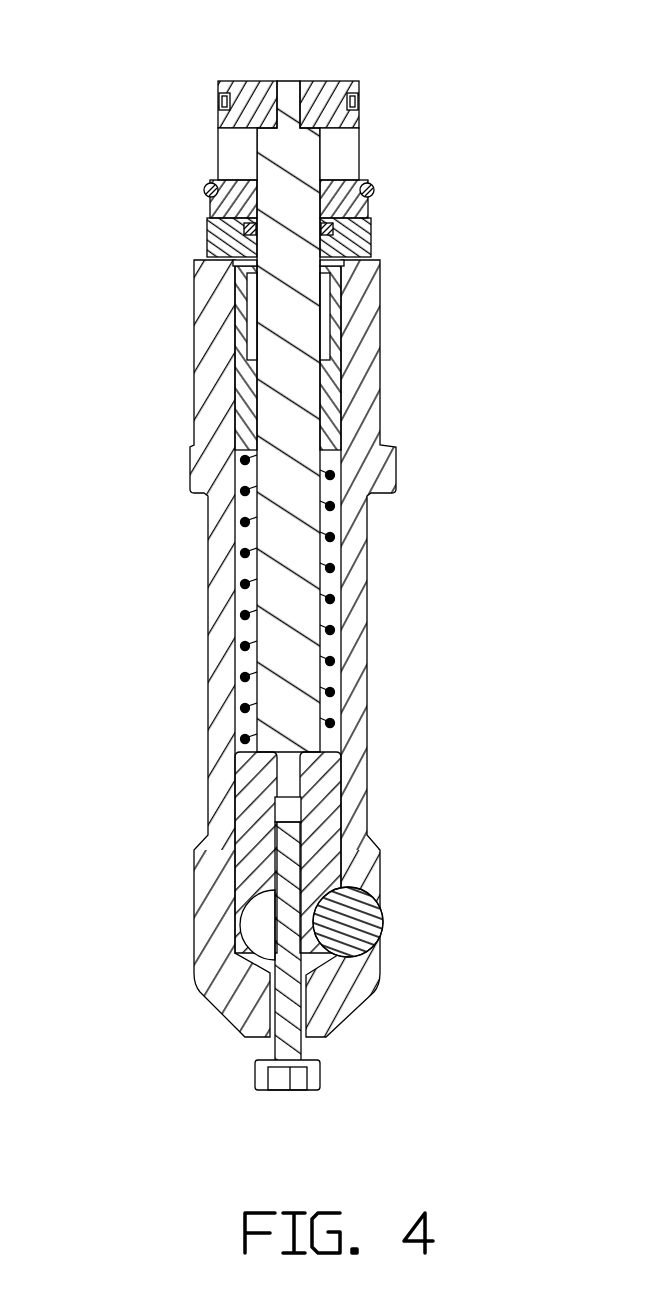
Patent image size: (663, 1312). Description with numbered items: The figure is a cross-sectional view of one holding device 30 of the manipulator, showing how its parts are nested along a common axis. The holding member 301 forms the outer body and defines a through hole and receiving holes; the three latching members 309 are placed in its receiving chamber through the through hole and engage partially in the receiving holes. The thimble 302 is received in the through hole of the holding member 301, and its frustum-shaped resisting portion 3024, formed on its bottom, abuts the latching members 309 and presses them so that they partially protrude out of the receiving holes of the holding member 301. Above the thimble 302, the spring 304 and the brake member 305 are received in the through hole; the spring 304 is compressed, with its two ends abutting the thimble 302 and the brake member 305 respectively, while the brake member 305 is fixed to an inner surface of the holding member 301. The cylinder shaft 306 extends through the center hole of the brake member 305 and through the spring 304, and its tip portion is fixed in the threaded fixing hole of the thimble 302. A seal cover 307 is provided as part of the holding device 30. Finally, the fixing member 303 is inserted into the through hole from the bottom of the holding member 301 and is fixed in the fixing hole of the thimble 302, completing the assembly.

The holding device 30 is at (112, 46).
The holding member 301 is at (360, 640).
The thimble 302 is at (273, 856).
The resisting portion 3024 is at (268, 885).
The fixing member 303 is at (287, 870).
The spring 304 is at (330, 570).
The brake member 305 is at (330, 385).
The cylinder shaft 306 is at (308, 162).
The seal cover 307 is at (355, 243).
The latching member 309 is at (378, 932).